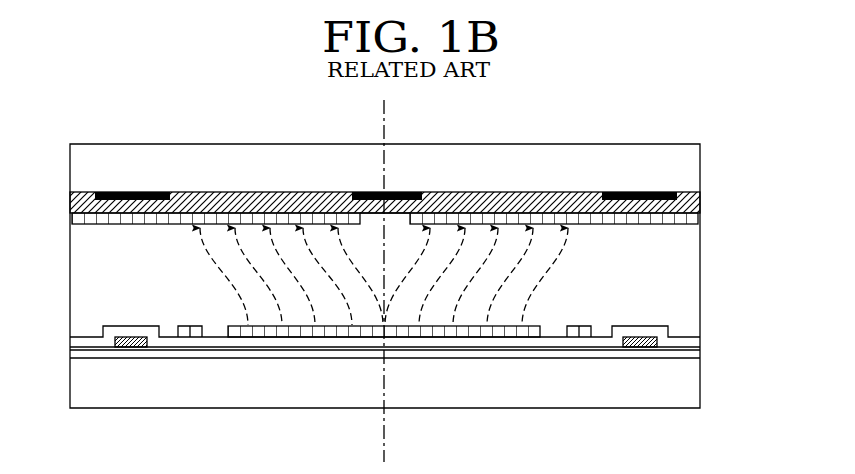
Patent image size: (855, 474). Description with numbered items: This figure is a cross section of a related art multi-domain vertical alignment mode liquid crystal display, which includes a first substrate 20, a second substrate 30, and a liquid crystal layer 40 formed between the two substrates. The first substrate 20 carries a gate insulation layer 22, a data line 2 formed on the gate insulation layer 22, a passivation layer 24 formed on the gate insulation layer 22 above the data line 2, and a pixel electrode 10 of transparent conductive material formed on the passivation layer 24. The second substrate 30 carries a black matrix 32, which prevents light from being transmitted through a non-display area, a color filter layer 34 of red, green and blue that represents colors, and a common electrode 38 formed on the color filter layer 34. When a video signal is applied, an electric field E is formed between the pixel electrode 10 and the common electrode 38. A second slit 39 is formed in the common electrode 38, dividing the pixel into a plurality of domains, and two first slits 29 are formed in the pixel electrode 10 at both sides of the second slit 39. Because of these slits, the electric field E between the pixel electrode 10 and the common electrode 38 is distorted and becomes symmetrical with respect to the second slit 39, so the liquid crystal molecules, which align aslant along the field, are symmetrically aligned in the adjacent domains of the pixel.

The second substrate 30 is at (680, 168).
The black matrix 32 is at (359, 192).
The color filter layer 34 is at (519, 205).
The common electrode 38 is at (565, 218).
The second slit 39 is at (397, 216).
The liquid crystal layer 40 is at (680, 280).
The electric field E is at (562, 252).
The passivation layer 24 is at (678, 340).
The first slits 29 is at (215, 331).
The pixel electrode 10 is at (475, 338).
The data line 2 is at (132, 348).
The gate insulation layer 22 is at (680, 352).
The first substrate 20 is at (680, 388).